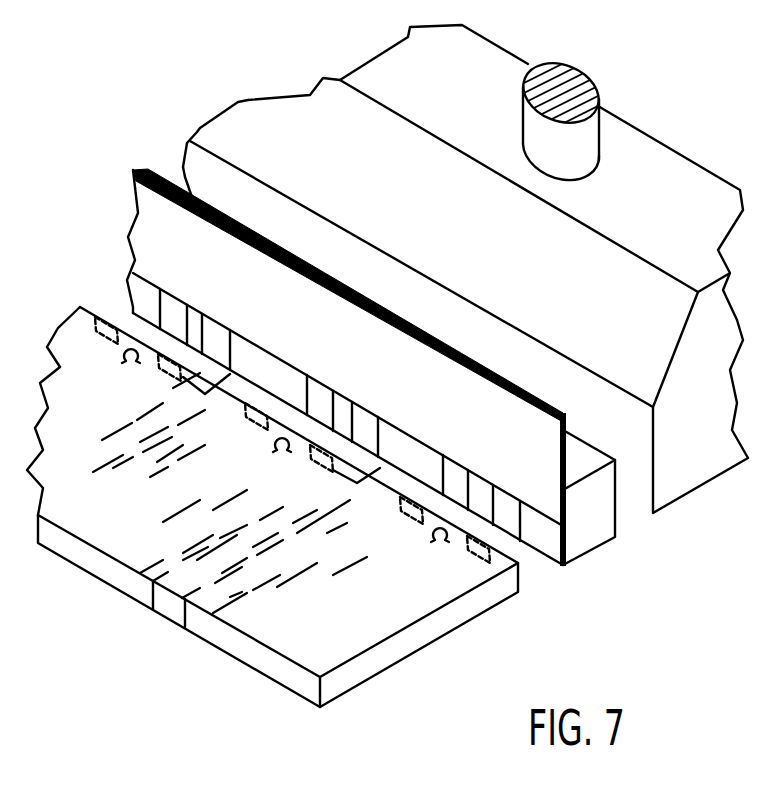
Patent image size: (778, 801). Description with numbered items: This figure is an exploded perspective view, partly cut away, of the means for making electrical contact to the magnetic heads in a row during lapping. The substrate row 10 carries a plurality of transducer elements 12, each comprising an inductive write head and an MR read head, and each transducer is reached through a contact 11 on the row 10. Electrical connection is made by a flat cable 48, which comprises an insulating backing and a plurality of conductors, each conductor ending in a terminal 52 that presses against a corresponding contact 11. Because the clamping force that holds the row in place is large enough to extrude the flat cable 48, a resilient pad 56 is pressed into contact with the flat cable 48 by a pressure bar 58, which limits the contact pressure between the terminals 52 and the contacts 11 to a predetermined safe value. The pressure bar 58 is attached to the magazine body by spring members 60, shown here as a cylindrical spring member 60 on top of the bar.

The substrate row 10 is at (347, 683).
The contact 11 is at (93, 278).
The transducer element 12 is at (133, 347).
The flat cable 48 is at (310, 322).
The terminal 52 is at (457, 485).
The resilient pad 56 is at (592, 528).
The pressure bar 58 is at (717, 455).
The spring member 60 is at (581, 162).